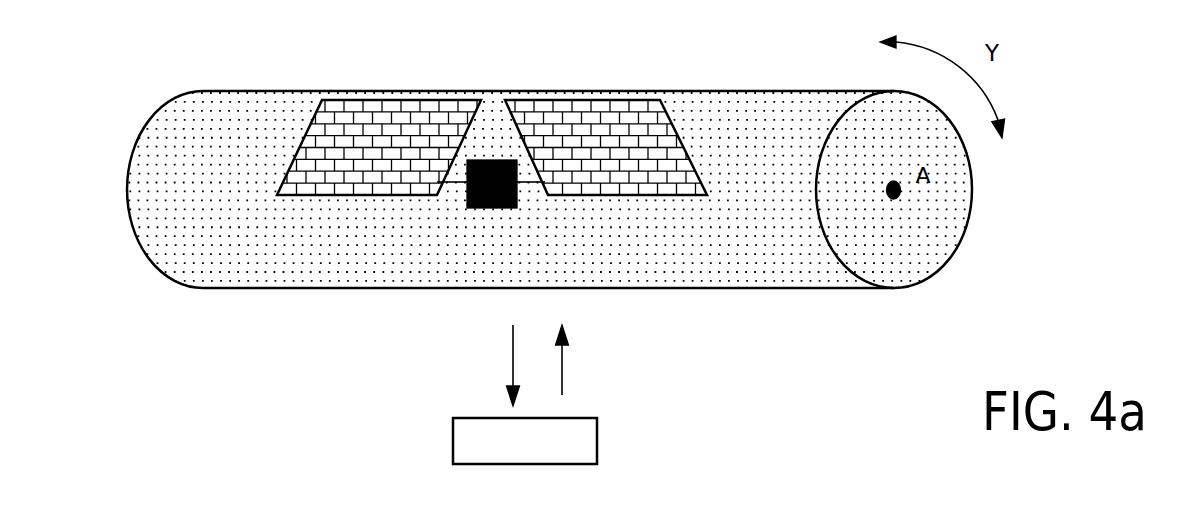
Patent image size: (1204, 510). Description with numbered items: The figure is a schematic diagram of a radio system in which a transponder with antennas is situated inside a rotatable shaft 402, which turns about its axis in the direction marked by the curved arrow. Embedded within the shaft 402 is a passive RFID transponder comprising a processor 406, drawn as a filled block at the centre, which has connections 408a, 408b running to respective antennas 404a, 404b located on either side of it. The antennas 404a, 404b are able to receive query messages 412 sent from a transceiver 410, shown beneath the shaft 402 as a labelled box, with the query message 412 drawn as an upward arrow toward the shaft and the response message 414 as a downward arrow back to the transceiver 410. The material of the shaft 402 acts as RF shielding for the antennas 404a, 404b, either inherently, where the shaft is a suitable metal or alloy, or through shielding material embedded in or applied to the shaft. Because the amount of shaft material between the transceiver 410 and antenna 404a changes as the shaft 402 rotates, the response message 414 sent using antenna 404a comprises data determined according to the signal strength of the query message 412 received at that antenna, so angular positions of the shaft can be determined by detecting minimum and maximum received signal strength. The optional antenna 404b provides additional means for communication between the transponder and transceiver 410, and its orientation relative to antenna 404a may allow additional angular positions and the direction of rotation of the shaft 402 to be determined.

The shaft 402 is at (762, 90).
The antenna 404a is at (650, 196).
The antenna 404b is at (330, 196).
The processor 406 is at (502, 209).
The connection 408a is at (543, 186).
The connection 408b is at (447, 184).
The transceiver 410 is at (453, 442).
The query message 412 is at (562, 383).
The response message 414 is at (512, 350).